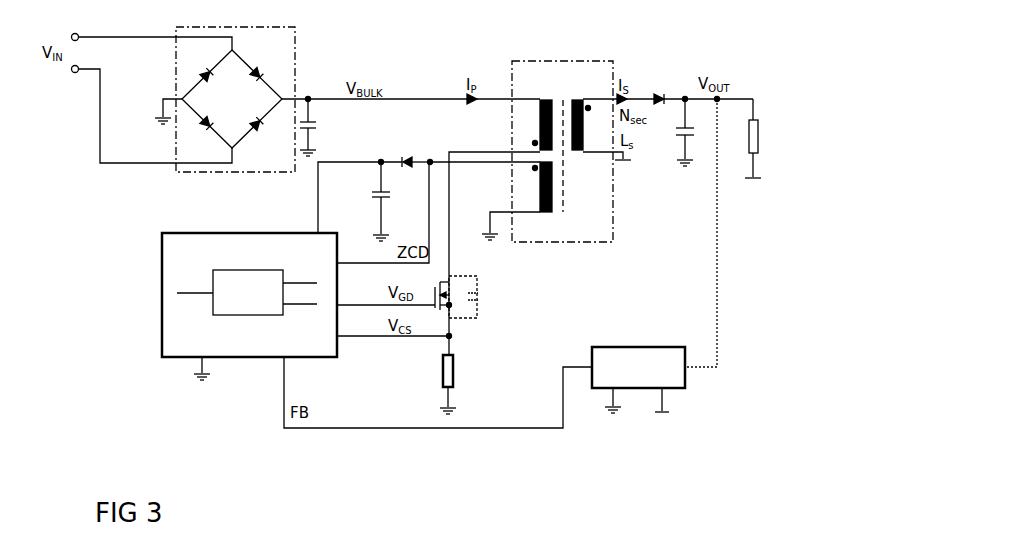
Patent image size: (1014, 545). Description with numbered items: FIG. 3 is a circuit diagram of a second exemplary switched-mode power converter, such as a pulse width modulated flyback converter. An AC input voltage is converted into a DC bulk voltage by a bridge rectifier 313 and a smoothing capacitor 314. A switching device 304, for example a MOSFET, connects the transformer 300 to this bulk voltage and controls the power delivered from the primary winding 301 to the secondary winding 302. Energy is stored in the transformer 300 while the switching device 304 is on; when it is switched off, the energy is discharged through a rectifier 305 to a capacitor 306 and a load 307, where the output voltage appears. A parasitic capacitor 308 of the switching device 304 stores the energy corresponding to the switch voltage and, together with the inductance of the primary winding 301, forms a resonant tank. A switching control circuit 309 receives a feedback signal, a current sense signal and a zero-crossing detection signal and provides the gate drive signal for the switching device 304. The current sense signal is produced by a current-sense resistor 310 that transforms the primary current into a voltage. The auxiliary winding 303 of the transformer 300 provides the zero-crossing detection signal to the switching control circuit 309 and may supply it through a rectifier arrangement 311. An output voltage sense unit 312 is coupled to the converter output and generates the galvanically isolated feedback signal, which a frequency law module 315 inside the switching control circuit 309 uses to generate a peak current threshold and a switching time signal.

The transformer 300 is at (538, 141).
The primary winding 301 is at (541, 116).
The secondary winding 302 is at (587, 116).
The auxiliary winding 303 is at (541, 198).
The switching device 304 is at (431, 312).
The rectifier 305 is at (660, 88).
The capacitor 306 is at (676, 136).
The load 307 is at (774, 138).
The parasitic capacitor 308 is at (481, 297).
The switching control circuit 309 is at (249, 297).
The current-sense resistor 310 is at (481, 379).
The rectifier arrangement 311 is at (396, 201).
The output voltage sense unit 312 is at (638, 370).
The bridge rectifier 313 is at (225, 89).
The smoothing capacitor 314 is at (325, 127).
The frequency law module 315 is at (249, 288).